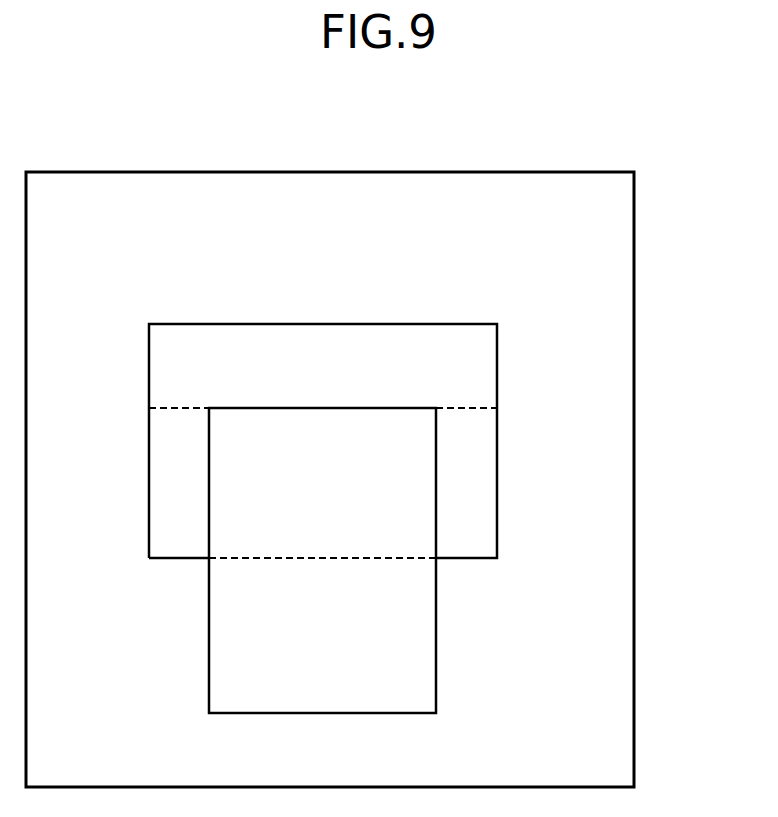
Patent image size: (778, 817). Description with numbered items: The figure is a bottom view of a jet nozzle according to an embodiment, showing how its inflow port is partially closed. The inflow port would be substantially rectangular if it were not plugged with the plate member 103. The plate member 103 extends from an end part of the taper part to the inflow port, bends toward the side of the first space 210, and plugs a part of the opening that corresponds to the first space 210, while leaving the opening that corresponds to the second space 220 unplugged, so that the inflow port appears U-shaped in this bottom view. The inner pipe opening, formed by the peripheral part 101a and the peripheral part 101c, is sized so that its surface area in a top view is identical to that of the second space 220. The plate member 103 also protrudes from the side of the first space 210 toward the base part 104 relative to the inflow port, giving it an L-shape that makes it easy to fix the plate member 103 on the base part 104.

The base part 104 is at (612, 310).
The second space 220 is at (422, 348).
The plate member 103 is at (416, 642).
The peripheral part 101c is at (460, 408).
The peripheral part 101a is at (367, 323).
The first space 210 is at (466, 494).